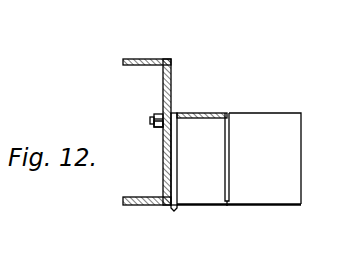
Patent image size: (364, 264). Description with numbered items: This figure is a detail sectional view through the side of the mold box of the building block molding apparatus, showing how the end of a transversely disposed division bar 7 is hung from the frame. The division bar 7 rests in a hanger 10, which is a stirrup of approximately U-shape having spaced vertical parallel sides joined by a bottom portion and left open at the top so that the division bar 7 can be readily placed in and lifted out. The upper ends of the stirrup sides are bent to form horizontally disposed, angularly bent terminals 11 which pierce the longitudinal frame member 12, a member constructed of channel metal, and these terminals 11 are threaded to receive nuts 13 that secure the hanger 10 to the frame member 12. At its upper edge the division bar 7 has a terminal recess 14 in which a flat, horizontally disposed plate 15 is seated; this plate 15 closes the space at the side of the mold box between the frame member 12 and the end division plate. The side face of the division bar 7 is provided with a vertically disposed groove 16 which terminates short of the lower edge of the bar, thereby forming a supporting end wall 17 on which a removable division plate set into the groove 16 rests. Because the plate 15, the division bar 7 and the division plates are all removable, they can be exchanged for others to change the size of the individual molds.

The division bar 7 is at (298, 168).
The hanger 10 is at (175, 212).
The angularly bent terminal 11 is at (152, 118).
The longitudinal frame member 12 is at (173, 63).
The nut 13 is at (156, 125).
The terminal recess 14 is at (201, 118).
The plate 15 is at (210, 112).
The vertical groove 16 is at (231, 134).
The supporting end wall 17 is at (228, 206).